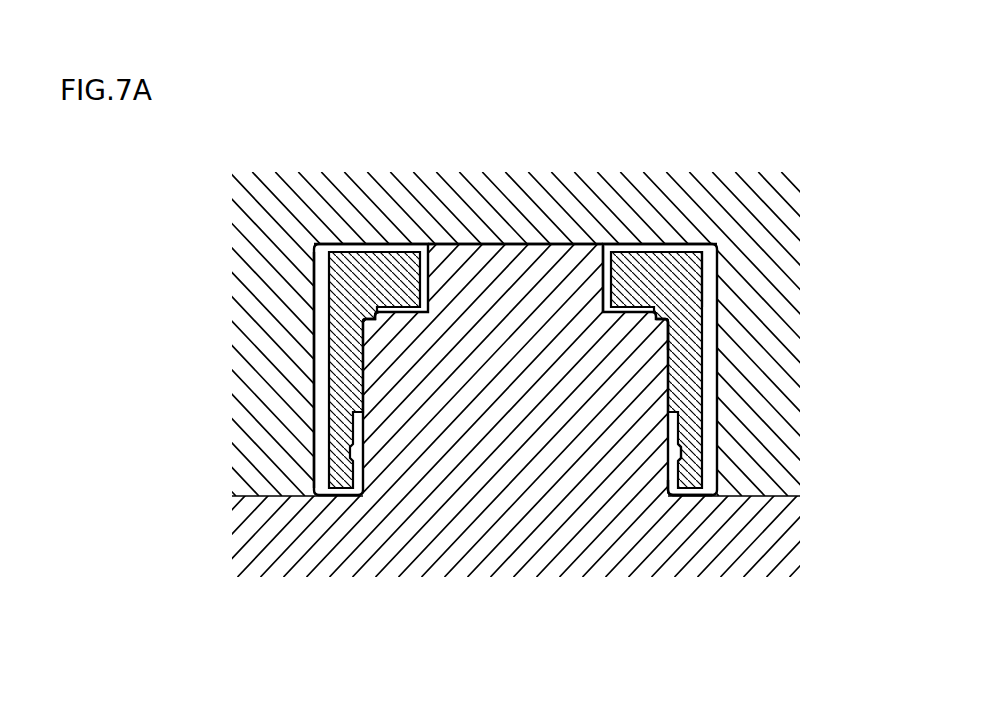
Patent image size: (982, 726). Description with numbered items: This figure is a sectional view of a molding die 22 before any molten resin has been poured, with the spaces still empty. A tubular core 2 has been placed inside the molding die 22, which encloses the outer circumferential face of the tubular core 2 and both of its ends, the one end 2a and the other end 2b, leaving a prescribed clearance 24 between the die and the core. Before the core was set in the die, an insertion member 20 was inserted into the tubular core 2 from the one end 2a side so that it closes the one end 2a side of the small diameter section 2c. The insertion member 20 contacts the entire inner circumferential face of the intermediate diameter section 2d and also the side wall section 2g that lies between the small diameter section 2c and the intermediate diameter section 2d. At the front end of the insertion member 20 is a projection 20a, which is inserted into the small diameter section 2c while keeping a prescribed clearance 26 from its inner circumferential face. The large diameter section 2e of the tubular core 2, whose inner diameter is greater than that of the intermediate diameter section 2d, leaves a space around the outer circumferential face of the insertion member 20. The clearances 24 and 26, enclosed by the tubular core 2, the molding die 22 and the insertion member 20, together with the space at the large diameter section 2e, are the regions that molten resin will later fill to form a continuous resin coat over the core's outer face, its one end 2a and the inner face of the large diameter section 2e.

The tubular core 2 is at (350, 288).
The one end 2a is at (693, 496).
The other end 2b is at (652, 255).
The small diameter section 2c is at (613, 277).
The intermediate diameter section 2d is at (668, 385).
The large diameter section 2e is at (673, 462).
The side wall section 2g is at (396, 317).
The insertion member 20 is at (509, 393).
The projection 20a is at (518, 258).
The molding die 22 is at (297, 203).
The clearance 24 is at (322, 380).
The clearance 26 is at (443, 252).